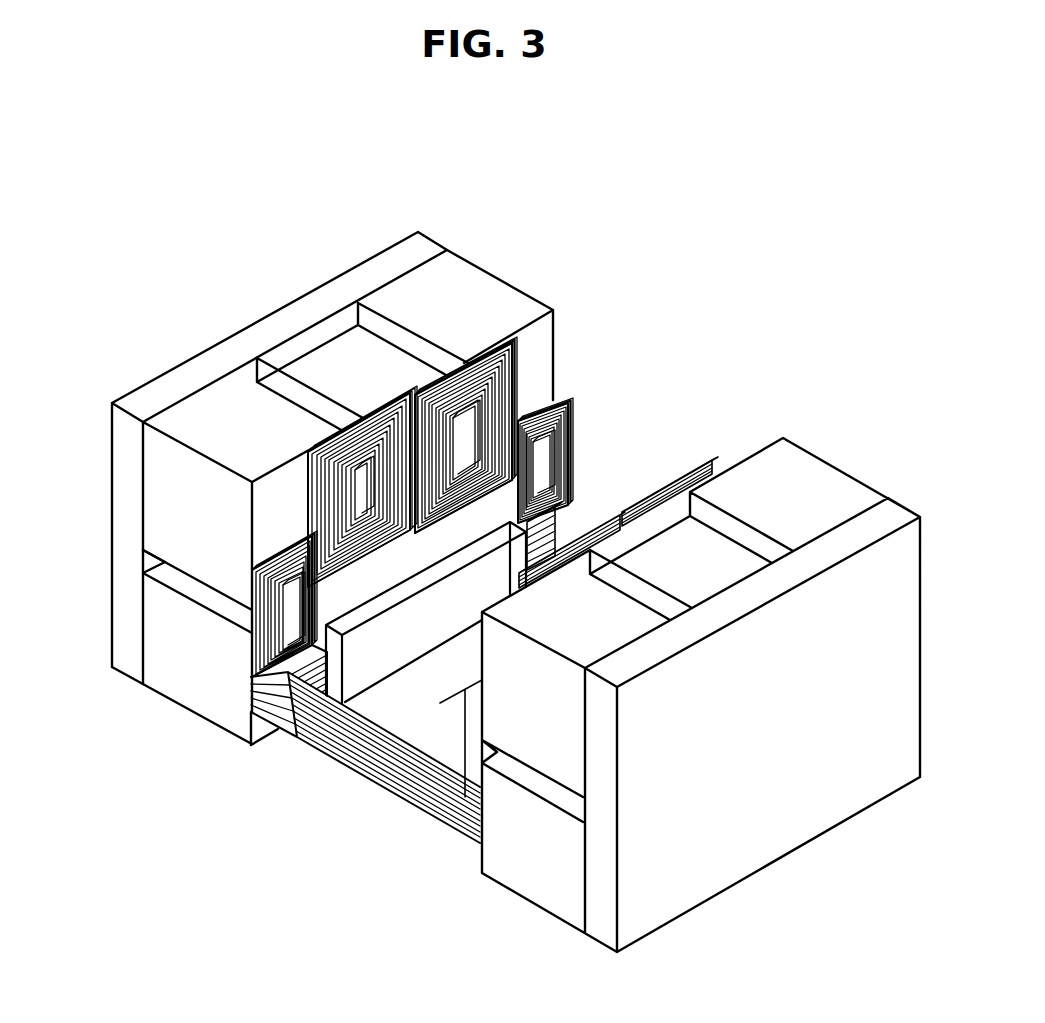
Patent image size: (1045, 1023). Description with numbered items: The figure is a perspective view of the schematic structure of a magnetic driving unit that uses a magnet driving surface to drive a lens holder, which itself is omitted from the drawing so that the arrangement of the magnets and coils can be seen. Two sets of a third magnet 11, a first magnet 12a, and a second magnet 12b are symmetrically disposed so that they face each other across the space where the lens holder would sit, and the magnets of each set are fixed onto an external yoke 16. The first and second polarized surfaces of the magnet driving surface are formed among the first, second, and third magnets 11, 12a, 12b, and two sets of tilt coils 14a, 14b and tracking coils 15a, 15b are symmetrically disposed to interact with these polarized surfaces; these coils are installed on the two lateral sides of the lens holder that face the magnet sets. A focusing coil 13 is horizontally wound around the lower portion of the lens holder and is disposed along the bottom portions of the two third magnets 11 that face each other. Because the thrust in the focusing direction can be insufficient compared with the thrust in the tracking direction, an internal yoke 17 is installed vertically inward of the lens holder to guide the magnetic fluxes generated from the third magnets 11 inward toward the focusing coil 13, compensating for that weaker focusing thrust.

The third magnet 11 is at (172, 647).
The first magnet 12a is at (173, 490).
The second magnet 12b is at (482, 288).
The focusing coil 13 is at (363, 763).
The tilt coil 14a is at (280, 602).
The tilt coil 14b is at (570, 410).
The tracking coil 15a is at (340, 463).
The tracking coil 15b is at (517, 367).
The external yoke 16 is at (230, 352).
The internal yoke 17 is at (360, 670).